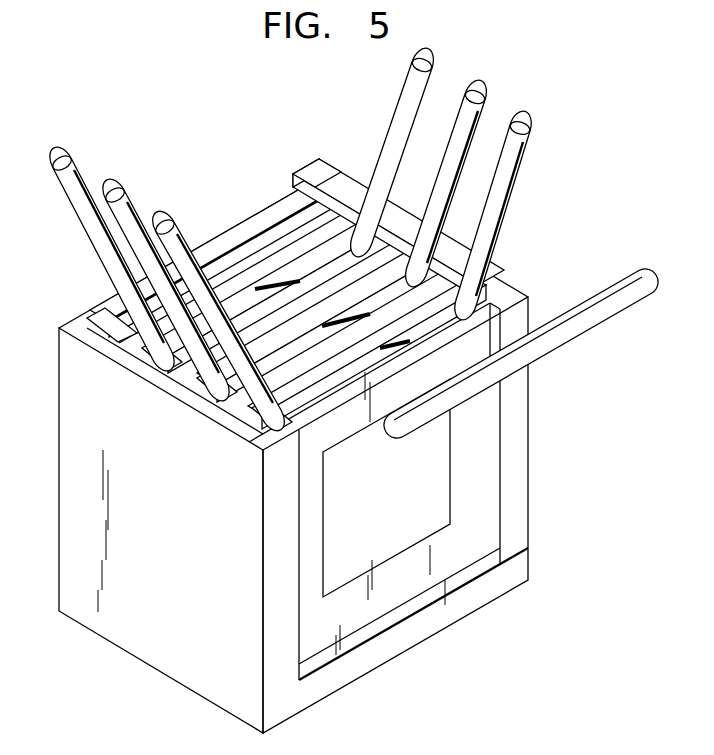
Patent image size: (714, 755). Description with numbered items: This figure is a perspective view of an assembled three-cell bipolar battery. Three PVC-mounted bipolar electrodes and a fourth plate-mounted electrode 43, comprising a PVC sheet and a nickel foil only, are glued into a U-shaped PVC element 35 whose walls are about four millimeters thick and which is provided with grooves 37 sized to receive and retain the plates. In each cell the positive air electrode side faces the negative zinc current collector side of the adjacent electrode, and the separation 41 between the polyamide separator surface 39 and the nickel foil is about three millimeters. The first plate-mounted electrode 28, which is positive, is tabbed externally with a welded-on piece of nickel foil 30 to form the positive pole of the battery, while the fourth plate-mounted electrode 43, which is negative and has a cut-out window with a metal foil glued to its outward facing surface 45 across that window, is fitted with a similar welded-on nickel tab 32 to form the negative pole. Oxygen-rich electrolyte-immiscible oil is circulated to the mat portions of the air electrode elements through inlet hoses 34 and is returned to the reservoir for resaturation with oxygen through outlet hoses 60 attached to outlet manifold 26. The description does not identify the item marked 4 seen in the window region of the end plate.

The membrane 4 is at (389, 502).
The cell housing 26 is at (488, 300).
The frame 28 is at (478, 484).
The positive terminal 30 is at (608, 318).
The negative terminal 32 is at (420, 180).
The electrode rod 34 is at (98, 234).
The side wall 35 is at (270, 549).
The slot 37 is at (101, 332).
The tab 39 is at (345, 218).
The plate 41 is at (300, 237).
The back plate 43 is at (242, 238).
The back plate top 45 is at (209, 233).
The electrode rod 60 is at (526, 148).